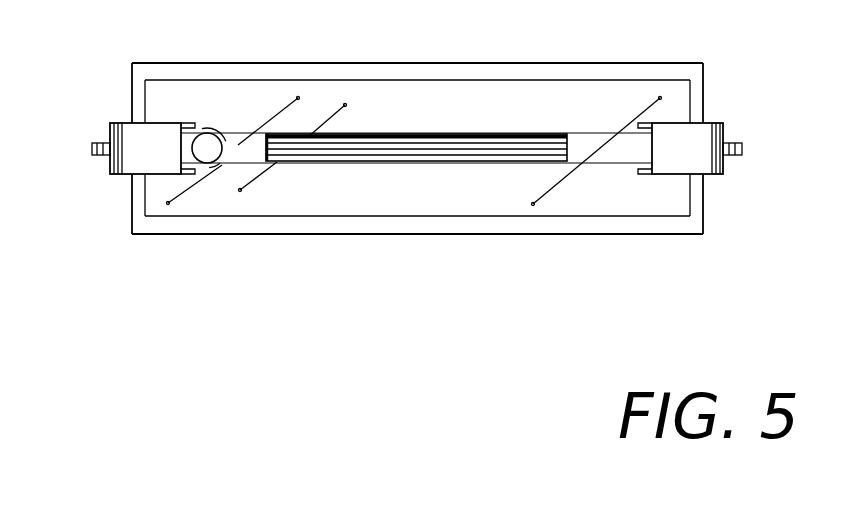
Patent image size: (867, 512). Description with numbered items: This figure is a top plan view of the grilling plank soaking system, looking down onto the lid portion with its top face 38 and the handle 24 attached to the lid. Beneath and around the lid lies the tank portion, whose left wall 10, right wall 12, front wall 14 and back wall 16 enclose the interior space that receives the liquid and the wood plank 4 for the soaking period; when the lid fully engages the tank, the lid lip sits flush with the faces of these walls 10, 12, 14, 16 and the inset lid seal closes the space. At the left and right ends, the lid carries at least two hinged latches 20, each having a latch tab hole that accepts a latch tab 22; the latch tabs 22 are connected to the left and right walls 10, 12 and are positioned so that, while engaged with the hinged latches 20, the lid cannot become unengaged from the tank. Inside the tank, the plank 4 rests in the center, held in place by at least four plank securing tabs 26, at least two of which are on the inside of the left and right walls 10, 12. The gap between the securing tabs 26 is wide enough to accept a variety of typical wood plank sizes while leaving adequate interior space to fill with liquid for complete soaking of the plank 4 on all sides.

The wood plank 4 is at (598, 140).
The left wall 10 is at (132, 190).
The right wall 12 is at (703, 190).
The front wall 14 is at (410, 234).
The back wall 16 is at (393, 63).
The hinged latch 20 is at (110, 122).
The latch tab 22 is at (93, 145).
The handle 24 is at (295, 135).
The plank securing tab 26 is at (638, 172).
The top face 38 is at (468, 120).